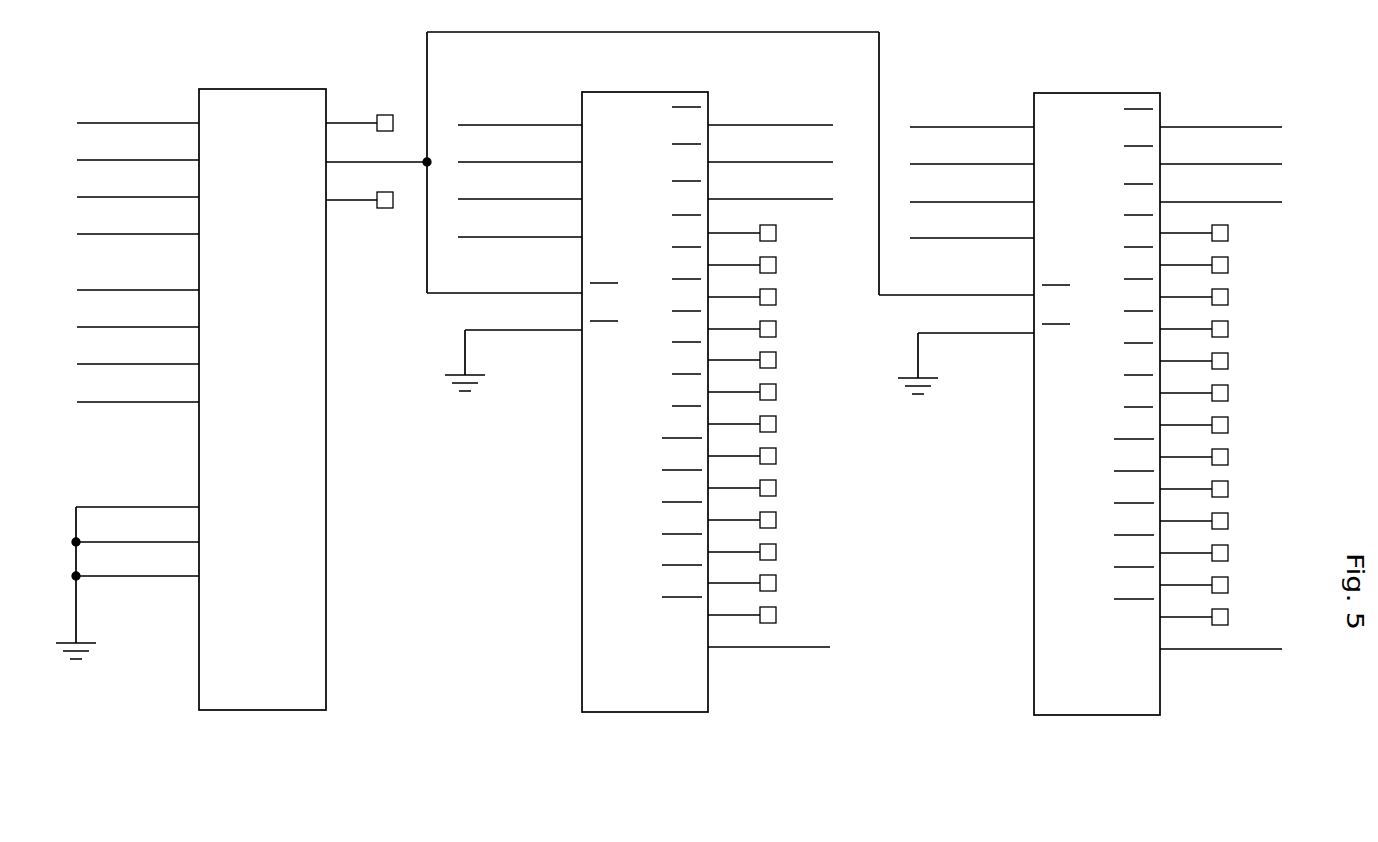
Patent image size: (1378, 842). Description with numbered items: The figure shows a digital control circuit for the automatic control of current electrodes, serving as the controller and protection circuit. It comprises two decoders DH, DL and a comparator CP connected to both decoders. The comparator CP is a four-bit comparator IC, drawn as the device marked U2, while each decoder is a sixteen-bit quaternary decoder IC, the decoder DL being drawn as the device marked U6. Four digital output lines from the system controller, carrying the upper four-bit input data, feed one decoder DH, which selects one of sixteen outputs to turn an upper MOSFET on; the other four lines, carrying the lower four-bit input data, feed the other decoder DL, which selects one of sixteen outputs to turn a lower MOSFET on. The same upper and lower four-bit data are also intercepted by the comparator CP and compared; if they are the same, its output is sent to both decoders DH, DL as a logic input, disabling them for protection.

The comparator CP is at (243, 400).
The comparator IC U2 (74HC85) U2 is at (343, 625).
The decoder DH is at (590, 543).
The decoder DL is at (1089, 403).
The decoder IC U6 (74HC154) U6 is at (1010, 508).